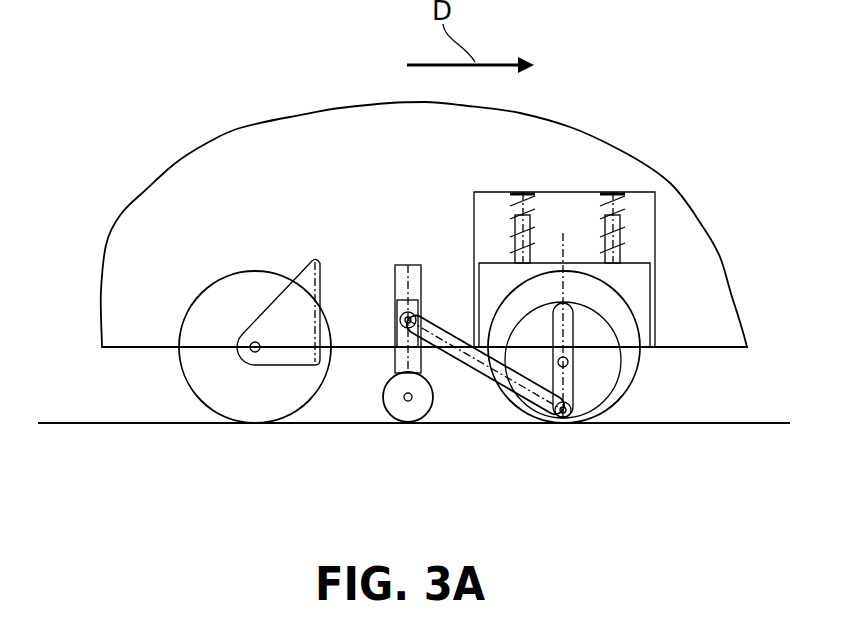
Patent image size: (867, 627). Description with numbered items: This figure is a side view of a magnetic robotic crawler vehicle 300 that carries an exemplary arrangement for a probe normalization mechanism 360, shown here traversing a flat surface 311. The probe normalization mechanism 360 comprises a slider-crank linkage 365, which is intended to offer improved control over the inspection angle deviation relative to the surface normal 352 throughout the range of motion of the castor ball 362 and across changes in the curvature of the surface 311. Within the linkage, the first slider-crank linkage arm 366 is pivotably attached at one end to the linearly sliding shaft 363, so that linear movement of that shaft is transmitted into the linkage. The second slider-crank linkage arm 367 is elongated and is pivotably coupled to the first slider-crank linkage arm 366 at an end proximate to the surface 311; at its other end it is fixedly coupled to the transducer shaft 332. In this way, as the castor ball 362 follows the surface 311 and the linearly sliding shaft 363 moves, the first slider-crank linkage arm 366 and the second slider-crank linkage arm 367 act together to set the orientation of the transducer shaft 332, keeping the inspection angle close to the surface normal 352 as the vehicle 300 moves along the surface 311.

The vehicle 300 is at (170, 71).
The surface 311 is at (93, 413).
The transducer shaft 332 is at (568, 360).
The surface normal 352 is at (565, 243).
The probe normalization mechanism 360 is at (360, 392).
The castor ball 362 is at (395, 405).
The linearly sliding shaft 363 is at (402, 313).
The slider-crank linkage 365 is at (486, 414).
The first slider-crank linkage arm 366 is at (462, 358).
The second slider-crank linkage arm 367 is at (570, 377).